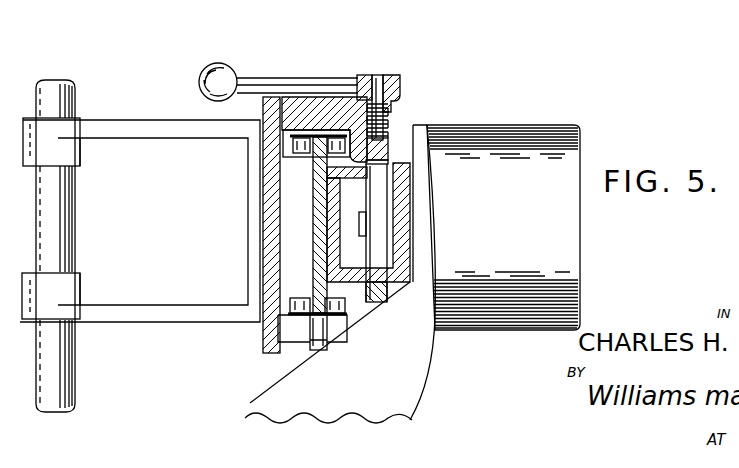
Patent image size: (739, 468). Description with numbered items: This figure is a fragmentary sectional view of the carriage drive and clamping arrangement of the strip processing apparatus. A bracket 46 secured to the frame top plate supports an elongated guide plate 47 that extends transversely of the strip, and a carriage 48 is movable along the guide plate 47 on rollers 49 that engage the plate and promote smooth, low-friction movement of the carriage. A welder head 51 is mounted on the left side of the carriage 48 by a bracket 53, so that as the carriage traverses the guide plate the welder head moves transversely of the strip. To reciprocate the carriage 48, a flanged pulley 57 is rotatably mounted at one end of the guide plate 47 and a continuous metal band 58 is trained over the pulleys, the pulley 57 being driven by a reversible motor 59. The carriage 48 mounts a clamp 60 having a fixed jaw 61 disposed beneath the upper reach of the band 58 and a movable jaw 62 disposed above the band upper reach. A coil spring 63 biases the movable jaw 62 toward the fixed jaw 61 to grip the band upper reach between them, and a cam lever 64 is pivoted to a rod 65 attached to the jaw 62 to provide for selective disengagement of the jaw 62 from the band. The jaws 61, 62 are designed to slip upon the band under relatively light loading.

The bracket 46 is at (415, 368).
The guide plate 47 is at (265, 168).
The carriage 48 is at (262, 338).
The rollers 49 is at (337, 133).
The welder head 51 is at (73, 227).
The bracket 53 is at (176, 246).
The flanged pulley 57 is at (385, 252).
The continuous metal band 58 is at (388, 148).
The reversible motor 59 is at (553, 138).
The clamp 60 is at (345, 96).
The fixed jaw 61 is at (390, 153).
The movable jaw 62 is at (393, 137).
The coil spring 63 is at (387, 120).
The cam lever 64 is at (247, 77).
The rod 65 is at (384, 93).